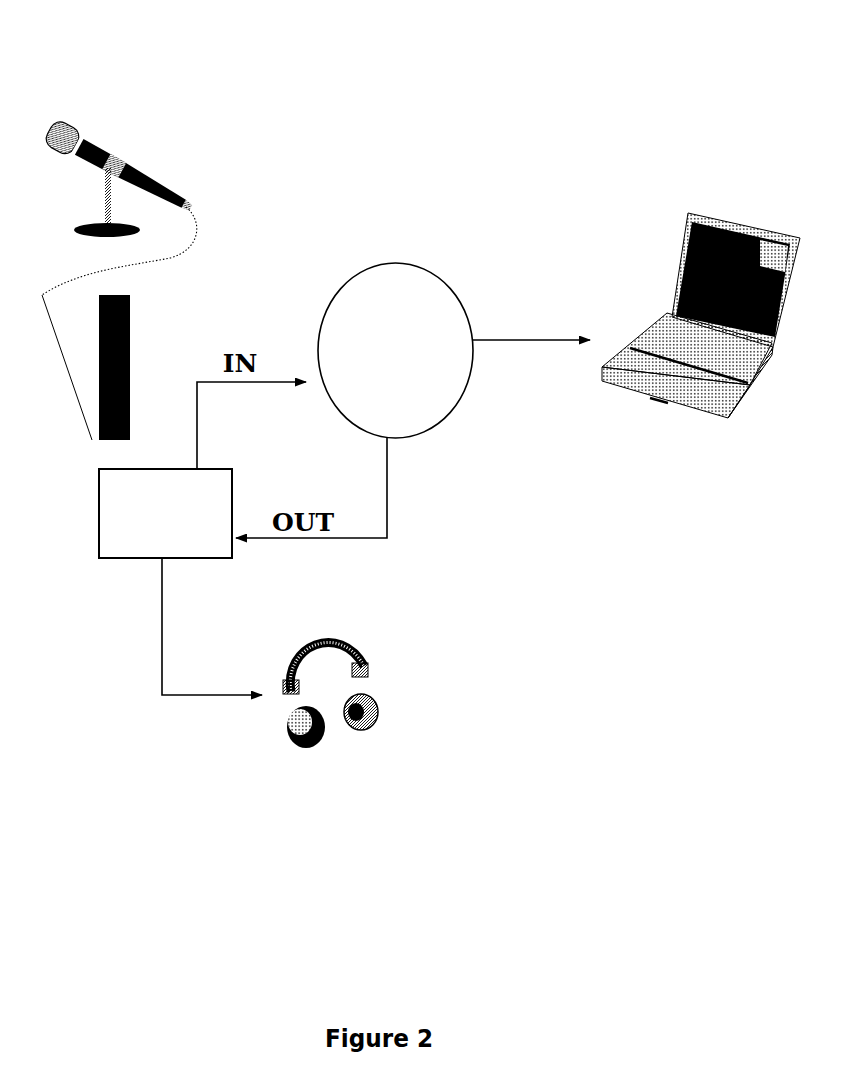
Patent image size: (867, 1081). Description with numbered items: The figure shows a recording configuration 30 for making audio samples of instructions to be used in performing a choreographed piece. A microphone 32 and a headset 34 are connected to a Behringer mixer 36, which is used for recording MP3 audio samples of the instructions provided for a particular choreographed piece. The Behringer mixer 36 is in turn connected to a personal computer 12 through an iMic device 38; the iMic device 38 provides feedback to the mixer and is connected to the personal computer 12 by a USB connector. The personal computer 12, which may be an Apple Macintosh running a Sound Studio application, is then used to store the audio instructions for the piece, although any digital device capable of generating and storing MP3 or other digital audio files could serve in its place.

The recording configuration 30 is at (491, 97).
The microphone 32 is at (119, 279).
The Behringer mixer 36 is at (165, 513).
The iMic device 38 is at (395, 350).
The personal computer 12 is at (711, 315).
The headset 34 is at (341, 695).